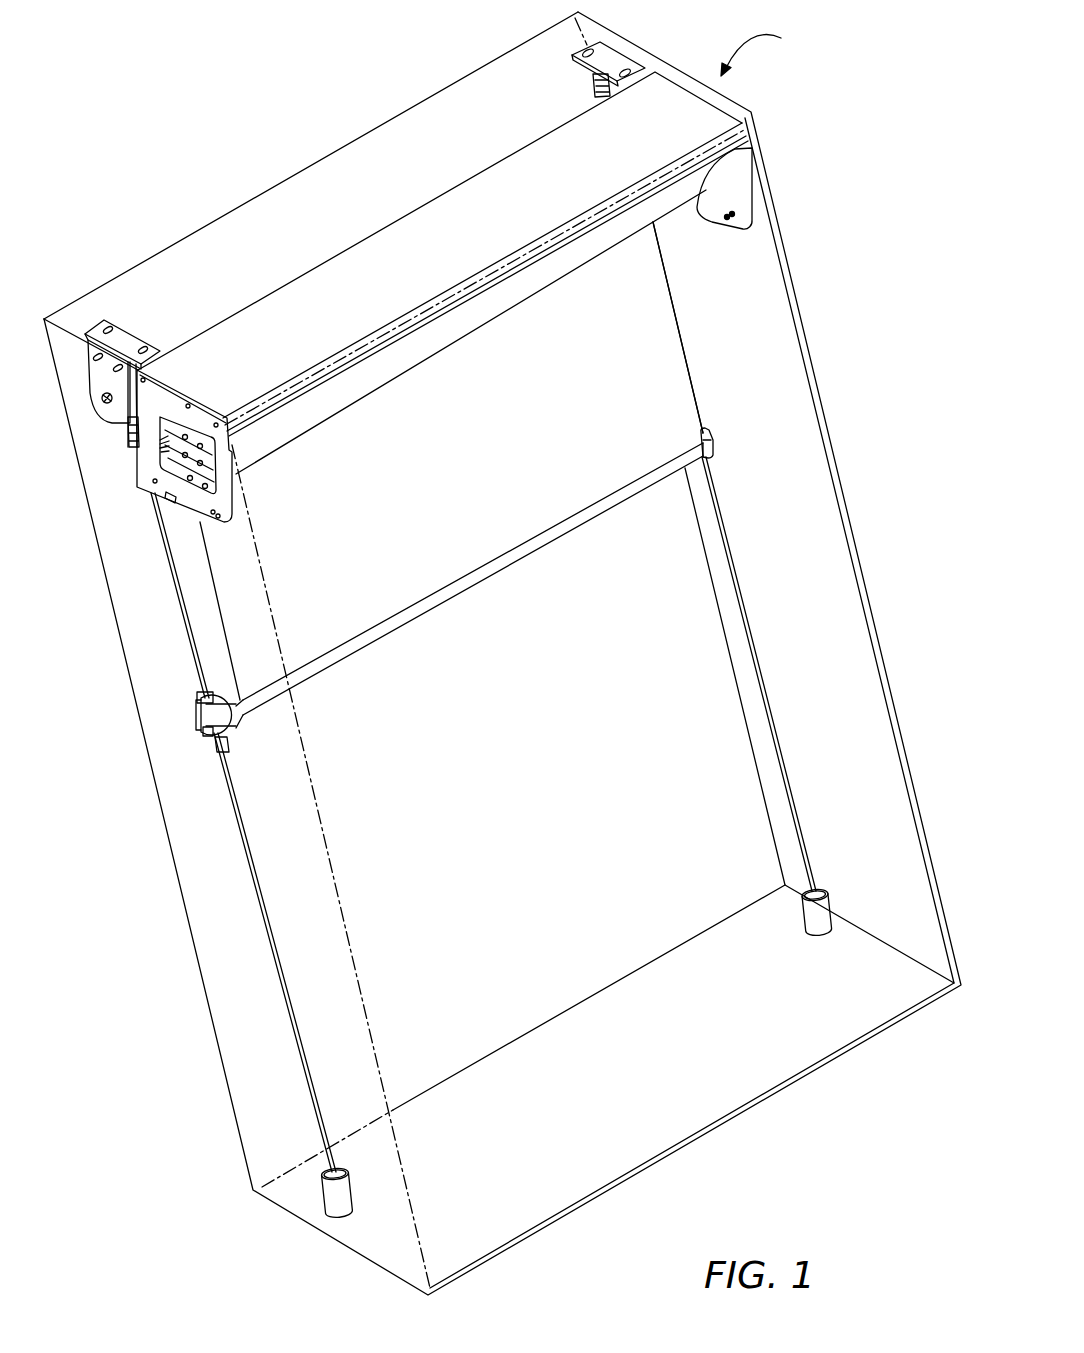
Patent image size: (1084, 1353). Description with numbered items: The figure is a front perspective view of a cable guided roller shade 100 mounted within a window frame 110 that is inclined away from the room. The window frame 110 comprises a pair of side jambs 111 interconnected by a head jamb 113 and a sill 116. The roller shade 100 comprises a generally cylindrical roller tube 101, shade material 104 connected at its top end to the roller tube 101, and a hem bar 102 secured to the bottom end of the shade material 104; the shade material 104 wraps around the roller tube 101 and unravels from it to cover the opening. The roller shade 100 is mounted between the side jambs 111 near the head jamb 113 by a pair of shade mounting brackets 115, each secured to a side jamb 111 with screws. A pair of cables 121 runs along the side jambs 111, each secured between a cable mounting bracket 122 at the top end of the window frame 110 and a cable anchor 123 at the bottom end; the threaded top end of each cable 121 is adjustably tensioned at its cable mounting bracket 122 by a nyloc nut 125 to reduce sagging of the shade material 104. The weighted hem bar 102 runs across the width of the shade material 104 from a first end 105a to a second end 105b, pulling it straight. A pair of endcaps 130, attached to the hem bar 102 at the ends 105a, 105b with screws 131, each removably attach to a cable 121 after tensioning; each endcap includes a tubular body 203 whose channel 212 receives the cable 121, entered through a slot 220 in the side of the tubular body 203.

The cable guided roller shade 100 is at (767, 50).
The roller tube 101 is at (483, 318).
The hem bar 102 is at (455, 597).
The shade material 104 is at (674, 327).
The first end 105a is at (243, 722).
The second end 105b is at (712, 460).
The window frame 110 is at (274, 178).
The side jambs 111 is at (841, 522).
The head jamb 113 is at (213, 237).
The shade mounting brackets 115 is at (742, 192).
The sill 116 is at (568, 1024).
The cables 121 is at (756, 636).
The cable mounting bracket 122 is at (616, 62).
The cable anchor 123 is at (825, 929).
The nyloc nut 125 is at (592, 96).
The endcaps 130 is at (714, 442).
The screws 131 is at (222, 740).
The tubular body 203 is at (207, 730).
The channel 212 is at (199, 697).
The slot 220 is at (200, 715).